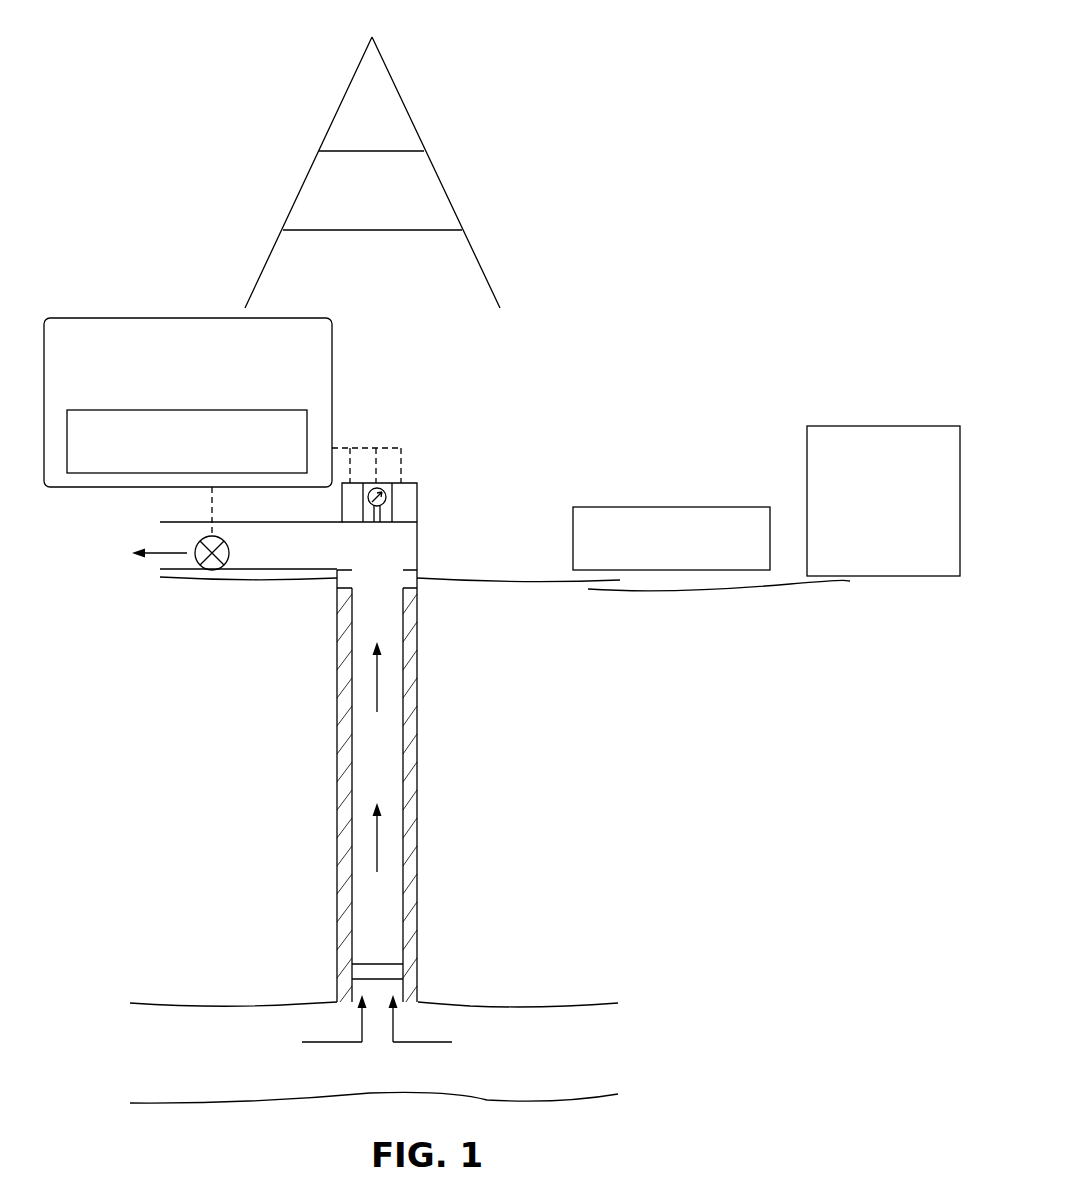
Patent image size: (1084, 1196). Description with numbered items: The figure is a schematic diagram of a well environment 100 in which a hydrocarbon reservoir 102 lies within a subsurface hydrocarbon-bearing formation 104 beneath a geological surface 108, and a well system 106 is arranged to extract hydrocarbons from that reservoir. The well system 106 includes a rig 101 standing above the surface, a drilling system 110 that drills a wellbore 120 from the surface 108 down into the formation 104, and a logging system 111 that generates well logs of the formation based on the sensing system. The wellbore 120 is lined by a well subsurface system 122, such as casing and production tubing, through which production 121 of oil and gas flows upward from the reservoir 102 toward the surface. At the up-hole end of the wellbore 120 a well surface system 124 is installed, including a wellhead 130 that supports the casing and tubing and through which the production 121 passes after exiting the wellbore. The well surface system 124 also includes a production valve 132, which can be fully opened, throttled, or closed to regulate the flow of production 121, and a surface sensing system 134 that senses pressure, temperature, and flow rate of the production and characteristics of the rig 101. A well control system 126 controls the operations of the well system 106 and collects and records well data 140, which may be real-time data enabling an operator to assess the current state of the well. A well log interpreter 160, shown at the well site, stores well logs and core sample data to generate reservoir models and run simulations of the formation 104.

The well environment 100 is at (517, 235).
The rig 101 is at (432, 98).
The hydrocarbon reservoir 102 is at (568, 1079).
The hydrocarbon-bearing formation 104 is at (598, 824).
The well system 106 is at (183, 270).
The geological surface 108 is at (557, 583).
The drilling system 110 is at (230, 153).
The logging system 111 is at (642, 507).
The wellbore 120 is at (420, 770).
The production 121 is at (158, 552).
The well subsurface system 122 is at (337, 808).
The well surface system 124 is at (405, 408).
The well control system 126 is at (112, 317).
The wellhead 130 is at (420, 573).
The production valve 132 is at (212, 570).
The surface sensing system 134 is at (417, 488).
The well data 140 is at (113, 410).
The well log interpreter 160 is at (905, 559).